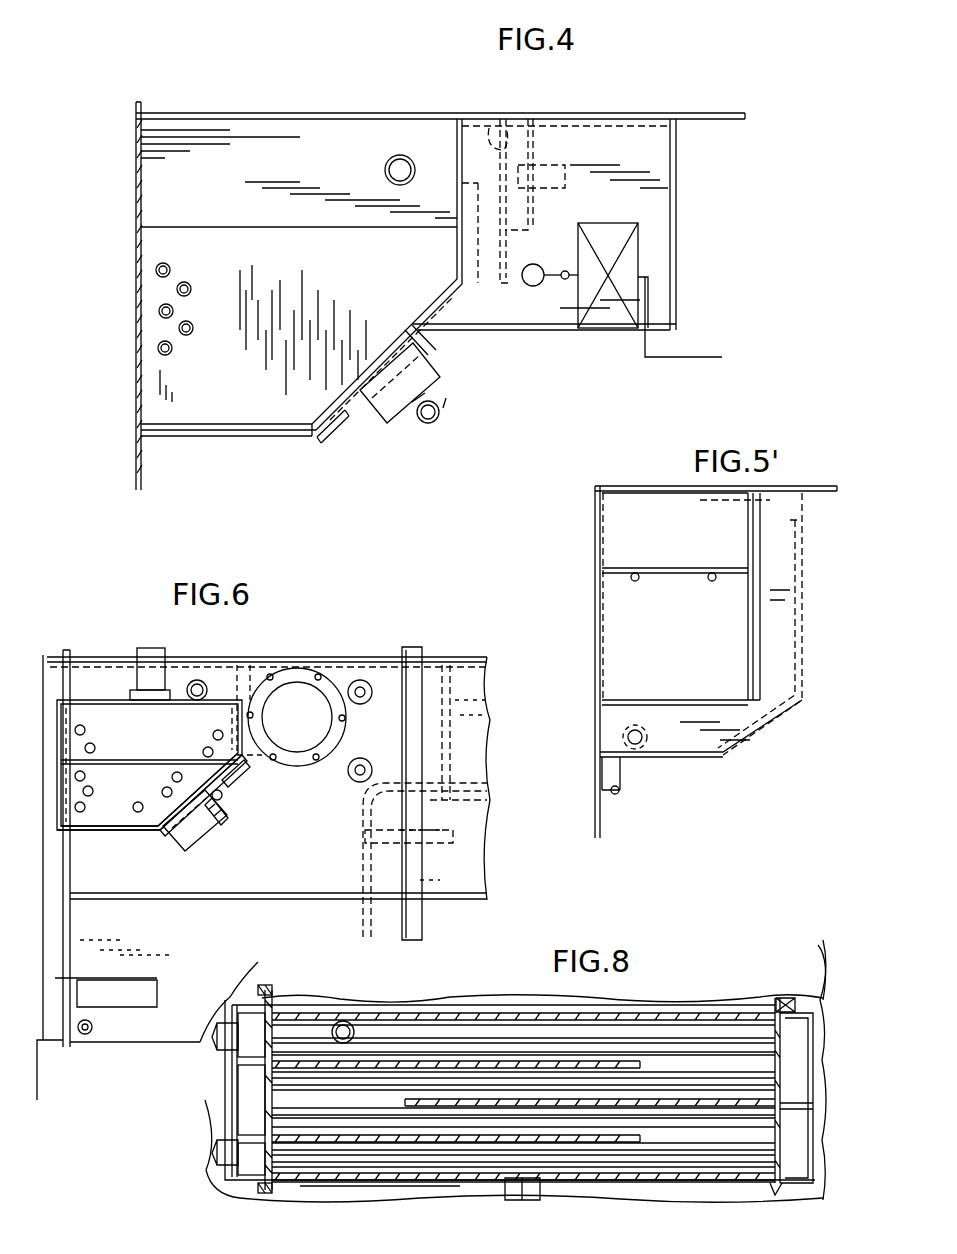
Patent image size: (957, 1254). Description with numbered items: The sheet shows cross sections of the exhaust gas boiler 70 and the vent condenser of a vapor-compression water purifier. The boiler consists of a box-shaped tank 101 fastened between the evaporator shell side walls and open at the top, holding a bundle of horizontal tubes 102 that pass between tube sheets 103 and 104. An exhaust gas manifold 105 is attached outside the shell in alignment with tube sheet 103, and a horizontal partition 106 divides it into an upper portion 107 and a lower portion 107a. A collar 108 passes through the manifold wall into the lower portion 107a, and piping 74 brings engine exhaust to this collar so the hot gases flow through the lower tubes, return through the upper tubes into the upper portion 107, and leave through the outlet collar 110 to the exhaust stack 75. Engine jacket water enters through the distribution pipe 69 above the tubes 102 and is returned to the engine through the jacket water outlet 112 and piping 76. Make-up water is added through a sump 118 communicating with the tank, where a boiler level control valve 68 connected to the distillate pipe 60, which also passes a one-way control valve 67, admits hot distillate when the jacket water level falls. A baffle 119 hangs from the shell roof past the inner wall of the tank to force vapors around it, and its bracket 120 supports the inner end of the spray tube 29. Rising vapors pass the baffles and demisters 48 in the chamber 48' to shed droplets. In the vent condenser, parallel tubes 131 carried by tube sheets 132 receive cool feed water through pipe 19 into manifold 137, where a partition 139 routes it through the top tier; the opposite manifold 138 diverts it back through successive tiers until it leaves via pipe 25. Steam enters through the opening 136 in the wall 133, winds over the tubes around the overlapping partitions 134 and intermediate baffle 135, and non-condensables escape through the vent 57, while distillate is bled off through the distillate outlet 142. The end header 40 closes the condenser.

In FIG. 4, the distillate pipe 60 is at (708, 357).
In FIG. 4, the one-way control valve 67 is at (700, 345).
In FIG. 6, the one-way control valve 67 is at (199, 680).
In FIG. 4, the boiler level control valve 68 is at (632, 248).
In FIG. 4, the distribution pipe 69 is at (404, 155).
In FIG. 4, the exhaust gas boiler 70 is at (130, 312).
In FIG. 4, the piping 76 is at (440, 420).
In FIG. 6, the piping 76 is at (222, 797).
In FIG. 4, the box-shaped tank 101 is at (338, 432).
In FIG. 6, the box-shaped tank 101 is at (160, 830).
In FIG. 4, the tubes 102 is at (160, 350).
In FIG. 6, the tubes 102 is at (94, 750).
In FIG. 4, the tube sheet 104 is at (142, 284).
In FIG. 4, the jacket water outlet 112 is at (436, 372).
In FIG. 6, the jacket water outlet 112 is at (248, 776).
In FIG. 4, the sump 118 is at (676, 185).
In FIG. 6, the sump 118 is at (340, 667).
In FIG. 4, the baffle 119 is at (492, 128).
In FIG. 6, the baffle 119 is at (278, 657).
In FIG. 4, the bracket 120 is at (540, 135).
In FIG. 4, the spray tube 29 is at (566, 165).
In FIG. 5, the baffles and demisters 48 is at (672, 643).
In FIG. 6, the baffles and demisters 48 is at (282, 873).
In FIG. 5, the chamber 48' is at (683, 662).
In FIG. 6, the chamber 48' is at (299, 682).
In FIG. 6, the upper portion 107 is at (100, 715).
In FIG. 6, the lower portion 107a is at (164, 834).
In FIG. 6, the horizontal partition 106 is at (155, 762).
In FIG. 6, the tube sheet 103 is at (92, 810).
In FIG. 6, the exhaust gas manifold 105 is at (118, 832).
In FIG. 6, the exhaust stack 75 is at (150, 655).
In FIG. 6, the outlet collar 110 is at (170, 690).
In FIG. 6, the piping 74 is at (210, 828).
In FIG. 6, the collar 108 is at (224, 818).
In FIG. 8, the tubes 131 is at (563, 1030).
In FIG. 8, the tube sheet 132 is at (272, 1010).
In FIG. 8, the wall 133 is at (446, 1170).
In FIG. 8, the horizontal partitions 134 is at (390, 1132).
In FIG. 8, the intermediate baffle 135 is at (670, 1103).
In FIG. 8, the opening 136 is at (402, 1170).
In FIG. 8, the manifold 137 is at (266, 990).
In FIG. 8, the manifold 138 is at (835, 965).
In FIG. 8, the partition 139 is at (238, 1060).
In FIG. 8, the distillate outlet 142 is at (542, 1195).
In FIG. 8, the vent 57 is at (352, 1022).
In FIG. 8, the pipe 19 is at (218, 1043).
In FIG. 8, the pipe 25 is at (214, 1153).
In FIG. 8, the end header 40 is at (790, 1183).